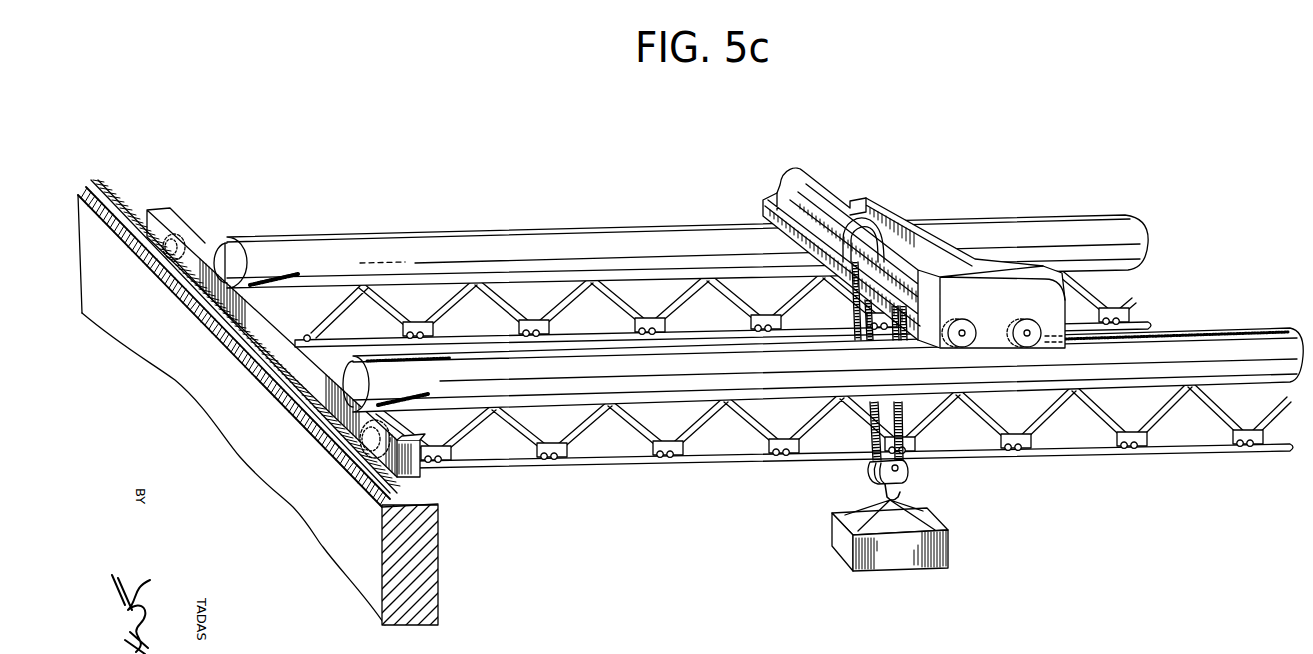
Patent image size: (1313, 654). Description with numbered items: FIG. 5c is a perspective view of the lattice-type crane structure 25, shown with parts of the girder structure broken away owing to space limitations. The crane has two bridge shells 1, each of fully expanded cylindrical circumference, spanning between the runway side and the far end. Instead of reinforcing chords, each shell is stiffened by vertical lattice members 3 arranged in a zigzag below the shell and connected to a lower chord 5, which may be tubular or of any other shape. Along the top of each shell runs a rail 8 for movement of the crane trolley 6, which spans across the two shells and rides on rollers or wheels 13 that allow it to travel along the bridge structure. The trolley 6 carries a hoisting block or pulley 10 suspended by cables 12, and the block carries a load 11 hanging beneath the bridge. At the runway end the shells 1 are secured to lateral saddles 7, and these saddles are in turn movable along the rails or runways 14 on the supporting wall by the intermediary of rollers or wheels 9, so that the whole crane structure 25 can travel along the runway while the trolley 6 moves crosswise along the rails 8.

The bridge shell 1 is at (758, 347).
The vertical lattice members 3 is at (723, 303).
The lower chord 5 is at (490, 342).
The crane trolley 6 is at (914, 244).
The lateral saddle 7 is at (425, 478).
The rail 8 is at (327, 235).
The roller or wheel 9 is at (180, 236).
The hoisting block or pulley 10 is at (905, 482).
The load 11 is at (928, 548).
The cables 12 is at (866, 306).
The rollers or wheels 13 is at (1021, 319).
The rails or runways 14 is at (114, 188).
The crane structure 25 is at (758, 332).